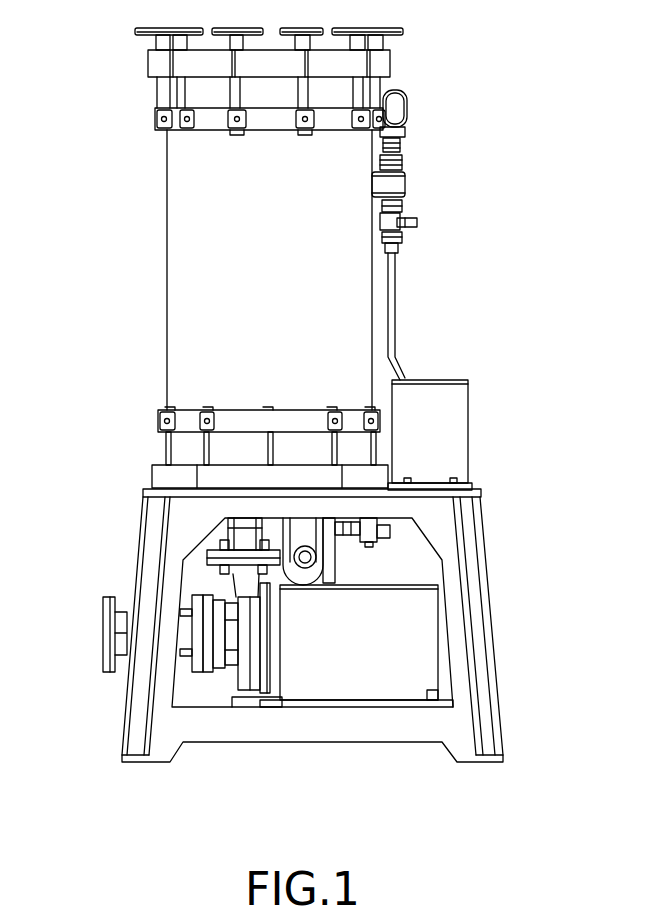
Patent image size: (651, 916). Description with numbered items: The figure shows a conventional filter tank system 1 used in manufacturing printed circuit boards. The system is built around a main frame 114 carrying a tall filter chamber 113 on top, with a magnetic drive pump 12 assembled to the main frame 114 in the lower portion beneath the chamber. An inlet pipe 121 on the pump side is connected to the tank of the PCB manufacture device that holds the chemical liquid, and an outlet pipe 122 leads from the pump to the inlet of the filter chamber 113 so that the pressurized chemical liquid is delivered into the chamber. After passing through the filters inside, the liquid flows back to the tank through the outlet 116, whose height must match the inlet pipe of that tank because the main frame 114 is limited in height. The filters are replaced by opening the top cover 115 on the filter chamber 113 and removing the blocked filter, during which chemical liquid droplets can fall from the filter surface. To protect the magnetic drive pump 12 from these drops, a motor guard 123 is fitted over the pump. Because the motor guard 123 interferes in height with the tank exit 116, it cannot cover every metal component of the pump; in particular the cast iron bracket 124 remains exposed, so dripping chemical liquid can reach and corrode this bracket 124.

The filter tank system 1 is at (306, 419).
The magnetic drive pump 12 is at (306, 659).
The filter chamber 113 is at (205, 253).
The main frame 114 is at (470, 575).
The top cover 115 is at (162, 63).
The outlet 116 is at (343, 568).
The inlet pipe 121 is at (112, 598).
The outlet pipe 122 is at (205, 548).
The motor guard 123 is at (372, 640).
The bracket 124 is at (275, 643).